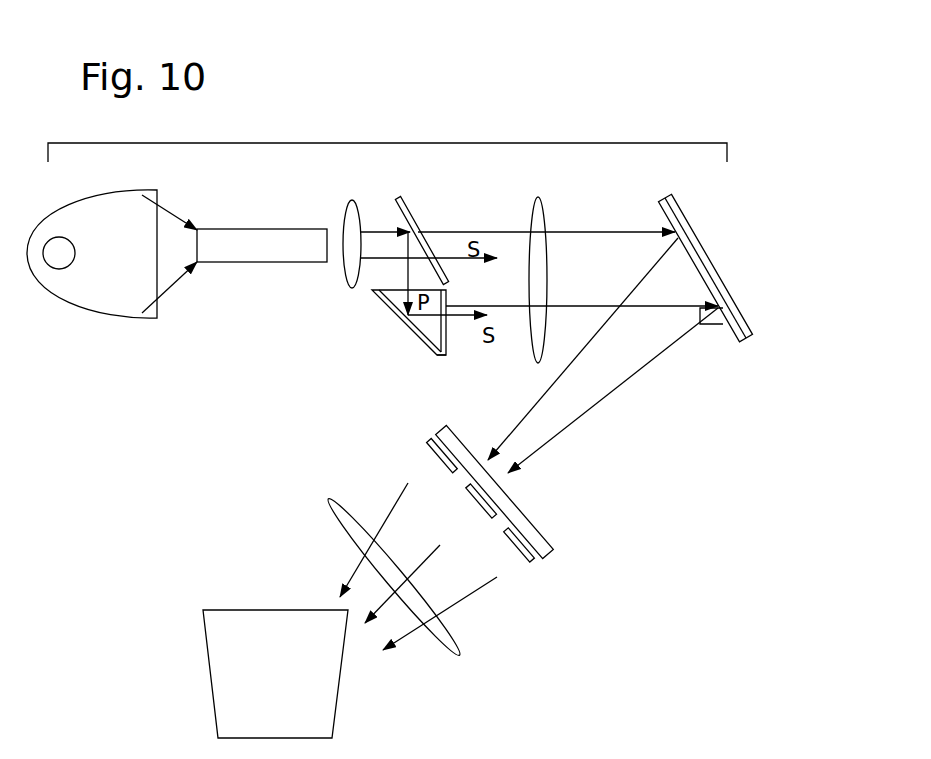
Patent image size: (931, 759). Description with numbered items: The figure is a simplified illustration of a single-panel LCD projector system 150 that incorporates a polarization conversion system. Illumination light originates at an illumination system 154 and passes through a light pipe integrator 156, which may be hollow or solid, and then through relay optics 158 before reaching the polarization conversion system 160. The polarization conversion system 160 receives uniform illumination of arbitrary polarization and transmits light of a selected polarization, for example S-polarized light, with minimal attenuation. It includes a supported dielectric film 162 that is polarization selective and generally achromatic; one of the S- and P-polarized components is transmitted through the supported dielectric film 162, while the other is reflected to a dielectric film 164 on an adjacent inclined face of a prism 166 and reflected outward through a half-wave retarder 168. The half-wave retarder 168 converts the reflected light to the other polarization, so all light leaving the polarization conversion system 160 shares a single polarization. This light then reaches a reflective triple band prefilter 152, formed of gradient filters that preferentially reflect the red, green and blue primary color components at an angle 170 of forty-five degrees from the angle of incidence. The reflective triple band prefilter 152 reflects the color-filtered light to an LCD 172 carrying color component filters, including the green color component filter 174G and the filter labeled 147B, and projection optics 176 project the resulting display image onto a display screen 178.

The single-panel LCD projector system 150 is at (441, 143).
The reflective triple band prefilter 152 is at (751, 350).
The illumination system 154 is at (123, 320).
The light pipe integrator 156 is at (230, 262).
The relay optics 158 is at (350, 290).
The polarization conversion system 160 is at (417, 352).
The supported dielectric film 162 is at (407, 200).
The dielectric film 164 is at (382, 303).
The prism 166 is at (433, 334).
The half-wave retarder 168 is at (442, 332).
The angle 170 is at (730, 334).
The LCD 172 is at (553, 570).
The color component filter 174G is at (430, 450).
The blue filter 147B is at (528, 563).
The projection optics 176 is at (330, 500).
The display screen 178 is at (228, 612).